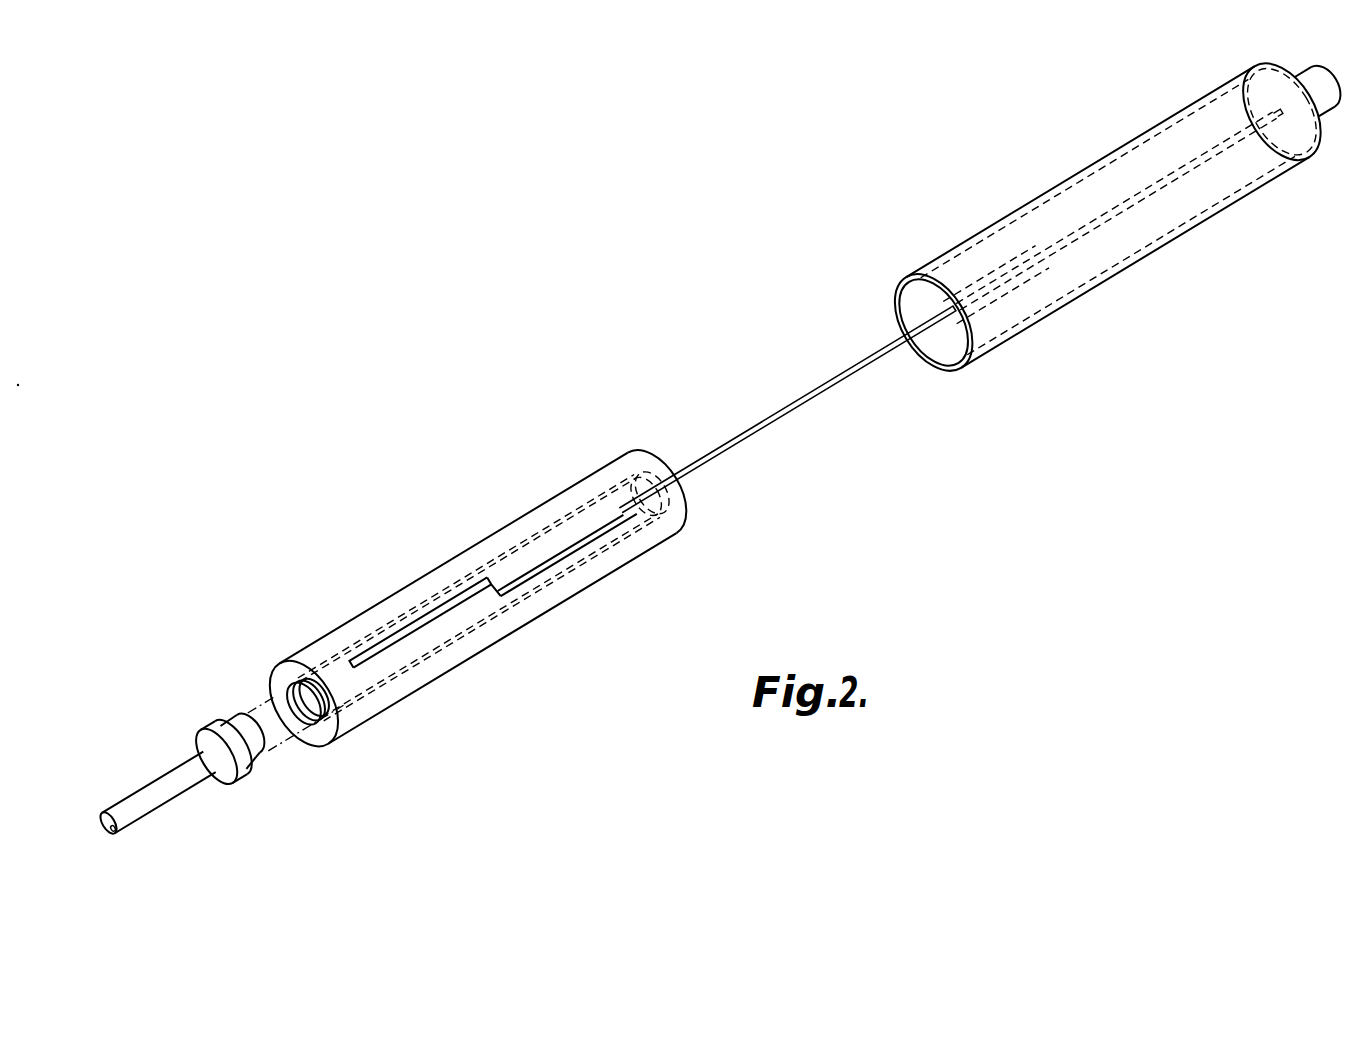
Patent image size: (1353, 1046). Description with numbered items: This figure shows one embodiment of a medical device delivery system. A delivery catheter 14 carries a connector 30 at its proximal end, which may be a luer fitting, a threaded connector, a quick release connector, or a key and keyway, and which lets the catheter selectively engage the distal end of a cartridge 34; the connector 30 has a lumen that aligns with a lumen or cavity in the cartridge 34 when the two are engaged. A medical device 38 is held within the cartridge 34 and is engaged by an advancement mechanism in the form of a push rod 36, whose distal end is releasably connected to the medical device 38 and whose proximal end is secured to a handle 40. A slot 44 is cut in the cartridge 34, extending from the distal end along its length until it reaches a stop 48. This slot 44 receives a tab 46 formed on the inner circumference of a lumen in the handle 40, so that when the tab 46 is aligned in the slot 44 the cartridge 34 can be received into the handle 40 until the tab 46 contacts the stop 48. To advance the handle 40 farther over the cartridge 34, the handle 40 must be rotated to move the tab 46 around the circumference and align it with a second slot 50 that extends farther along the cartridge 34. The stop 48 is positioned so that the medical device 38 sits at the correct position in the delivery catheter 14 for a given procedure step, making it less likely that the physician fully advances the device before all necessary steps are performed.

The delivery catheter 14 is at (152, 778).
The connector 30 is at (209, 725).
The cartridge 34 is at (527, 612).
The push rod 36 is at (744, 428).
The medical device 38 is at (325, 675).
The handle 40 is at (1221, 212).
The slot 44 is at (590, 532).
The tab 46 is at (953, 310).
The stop 48 is at (492, 590).
The second slot 50 is at (420, 615).